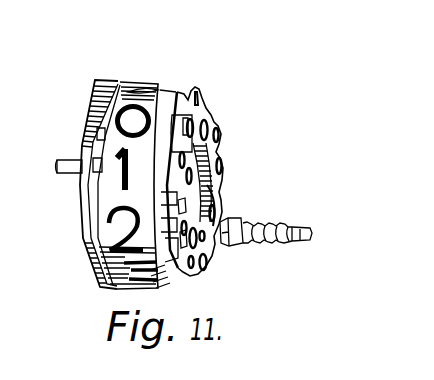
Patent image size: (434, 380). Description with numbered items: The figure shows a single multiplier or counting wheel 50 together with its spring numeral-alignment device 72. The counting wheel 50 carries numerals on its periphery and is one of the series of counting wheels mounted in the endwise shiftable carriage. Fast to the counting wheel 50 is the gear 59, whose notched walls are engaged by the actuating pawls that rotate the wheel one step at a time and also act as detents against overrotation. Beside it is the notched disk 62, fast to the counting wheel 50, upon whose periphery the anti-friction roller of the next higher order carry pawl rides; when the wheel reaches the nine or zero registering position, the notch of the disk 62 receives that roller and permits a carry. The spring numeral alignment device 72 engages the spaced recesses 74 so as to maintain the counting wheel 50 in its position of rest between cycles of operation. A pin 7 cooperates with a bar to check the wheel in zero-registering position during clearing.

The pin 7 is at (56, 165).
The counting wheel 50 is at (160, 88).
The gear 59 is at (203, 105).
The notched disk 62 is at (96, 99).
The spring numeral alignment device 72 is at (231, 226).
The spaced recesses 74 is at (217, 190).